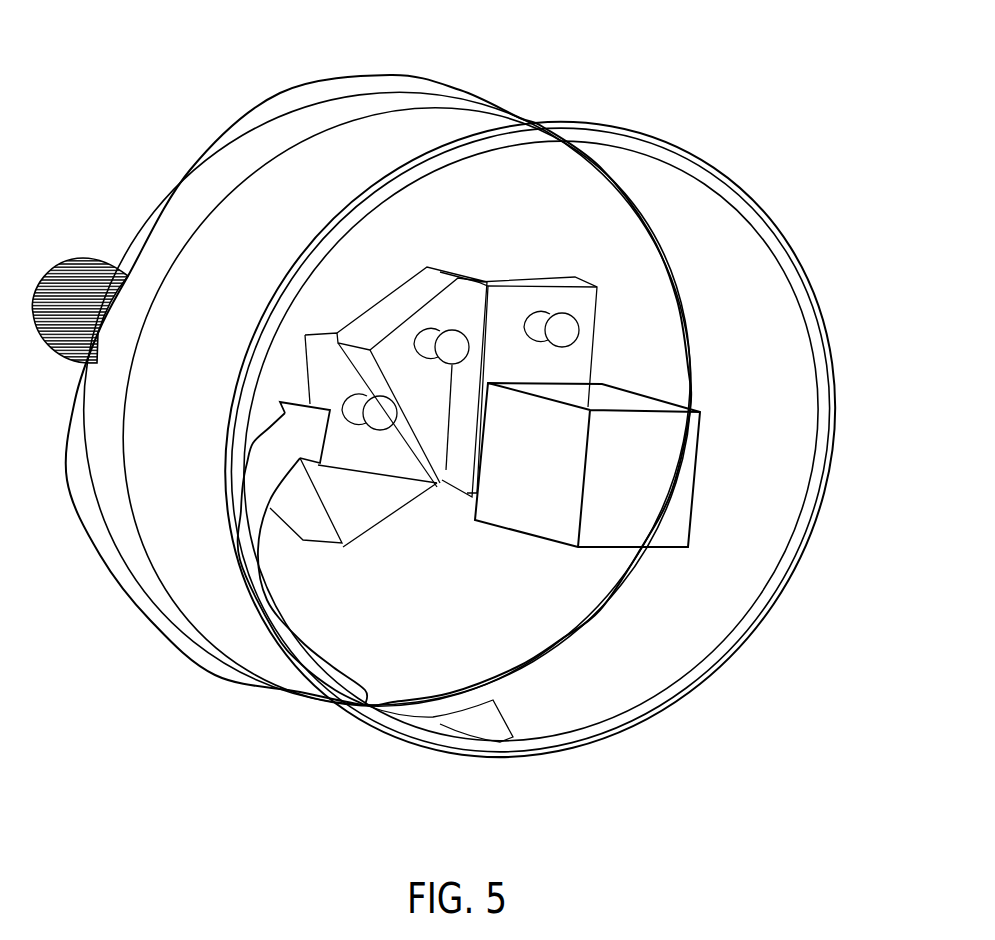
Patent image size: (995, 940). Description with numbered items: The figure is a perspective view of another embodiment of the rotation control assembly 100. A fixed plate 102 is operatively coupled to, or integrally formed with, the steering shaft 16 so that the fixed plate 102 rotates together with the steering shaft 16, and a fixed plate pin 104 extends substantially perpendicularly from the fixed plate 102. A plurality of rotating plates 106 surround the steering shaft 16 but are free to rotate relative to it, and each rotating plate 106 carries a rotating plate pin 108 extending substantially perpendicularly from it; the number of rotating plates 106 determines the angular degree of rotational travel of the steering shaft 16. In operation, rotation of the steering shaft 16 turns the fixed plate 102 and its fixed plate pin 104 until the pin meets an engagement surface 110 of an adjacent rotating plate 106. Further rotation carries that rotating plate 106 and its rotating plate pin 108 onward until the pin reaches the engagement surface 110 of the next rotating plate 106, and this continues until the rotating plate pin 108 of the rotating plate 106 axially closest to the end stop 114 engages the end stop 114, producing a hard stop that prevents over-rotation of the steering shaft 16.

The rotation control assembly 100 is at (668, 103).
The steering shaft 16 is at (70, 262).
The fixed plate 102 is at (381, 535).
The fixed plate pin 104 is at (370, 498).
The rotating plate 106 is at (319, 363).
The rotating plate pin 108 is at (455, 345).
The engagement surface 110 is at (453, 427).
The end stop 114 is at (683, 440).